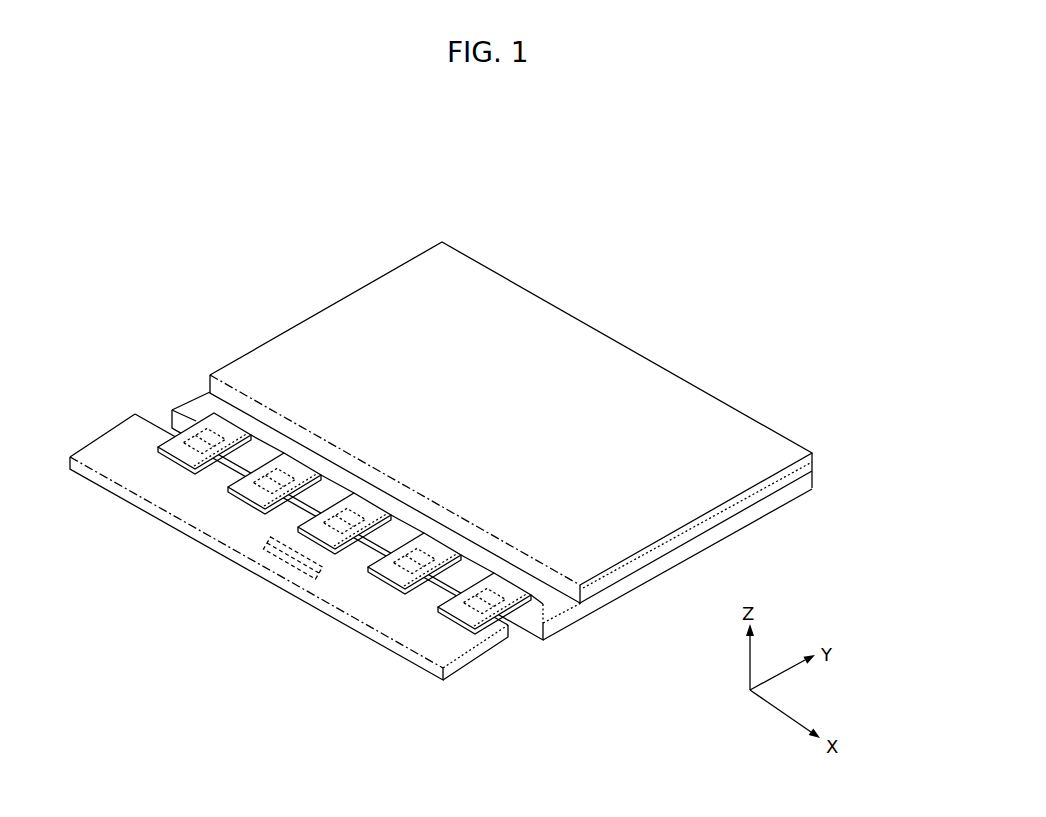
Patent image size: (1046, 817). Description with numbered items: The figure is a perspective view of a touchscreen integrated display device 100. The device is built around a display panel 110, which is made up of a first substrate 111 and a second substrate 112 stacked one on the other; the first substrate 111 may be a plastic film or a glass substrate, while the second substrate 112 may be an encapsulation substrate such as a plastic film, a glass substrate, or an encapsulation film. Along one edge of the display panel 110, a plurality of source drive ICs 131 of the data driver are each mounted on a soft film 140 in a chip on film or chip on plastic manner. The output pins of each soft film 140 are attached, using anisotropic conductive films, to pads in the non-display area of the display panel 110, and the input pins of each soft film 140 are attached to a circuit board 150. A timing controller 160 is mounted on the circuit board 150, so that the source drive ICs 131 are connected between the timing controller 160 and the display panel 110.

The display device 100 is at (500, 482).
The display panel 110 is at (551, 441).
The first substrate 111 is at (816, 484).
The second substrate 112 is at (816, 459).
The source drive IC 131 is at (488, 604).
The soft film 140 is at (344, 567).
The circuit board 150 is at (289, 568).
The timing controller 160 is at (296, 572).